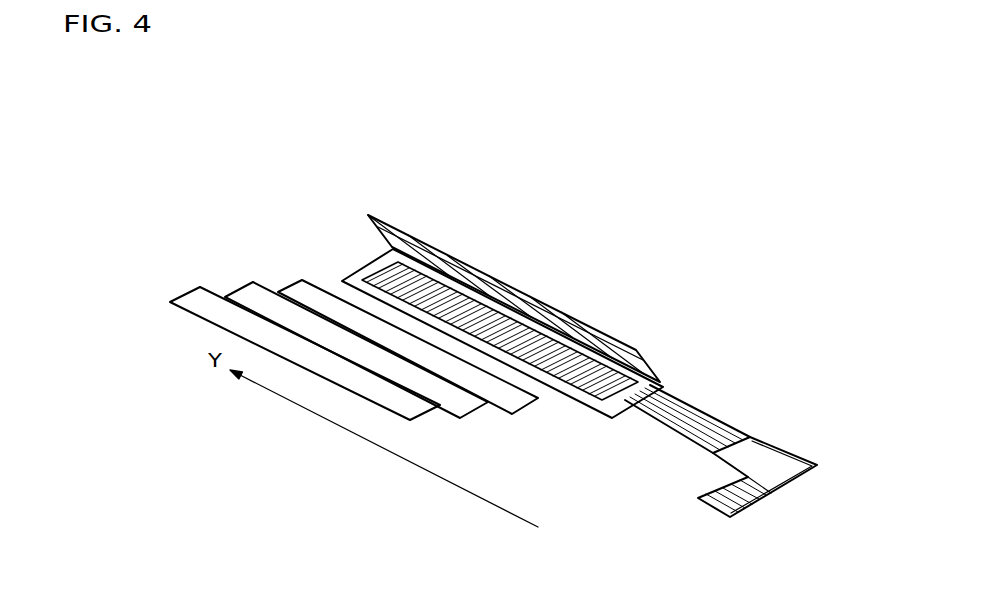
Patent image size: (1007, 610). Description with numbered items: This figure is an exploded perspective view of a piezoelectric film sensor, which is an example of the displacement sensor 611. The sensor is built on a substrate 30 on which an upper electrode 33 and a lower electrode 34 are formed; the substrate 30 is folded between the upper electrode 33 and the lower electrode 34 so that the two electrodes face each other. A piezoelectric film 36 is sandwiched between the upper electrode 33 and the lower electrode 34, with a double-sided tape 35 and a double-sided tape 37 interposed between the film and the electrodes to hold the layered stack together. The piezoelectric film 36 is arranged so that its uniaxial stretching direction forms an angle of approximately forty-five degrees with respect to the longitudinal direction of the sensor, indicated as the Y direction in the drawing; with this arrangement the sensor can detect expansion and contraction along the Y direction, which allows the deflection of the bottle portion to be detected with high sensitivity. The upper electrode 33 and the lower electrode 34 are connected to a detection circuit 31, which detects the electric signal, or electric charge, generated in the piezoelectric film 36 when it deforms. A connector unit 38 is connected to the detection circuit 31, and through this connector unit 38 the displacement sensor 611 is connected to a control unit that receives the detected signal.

The displacement sensor 611 is at (336, 120).
The substrate 30 is at (373, 215).
The detection circuit 31 is at (785, 470).
The upper electrode 33 is at (538, 297).
The lower electrode 34 is at (377, 272).
The double-sided tape 35 is at (180, 292).
The piezoelectric film 36 is at (243, 292).
The double-sided tape 37 is at (295, 287).
The connector unit 38 is at (707, 522).